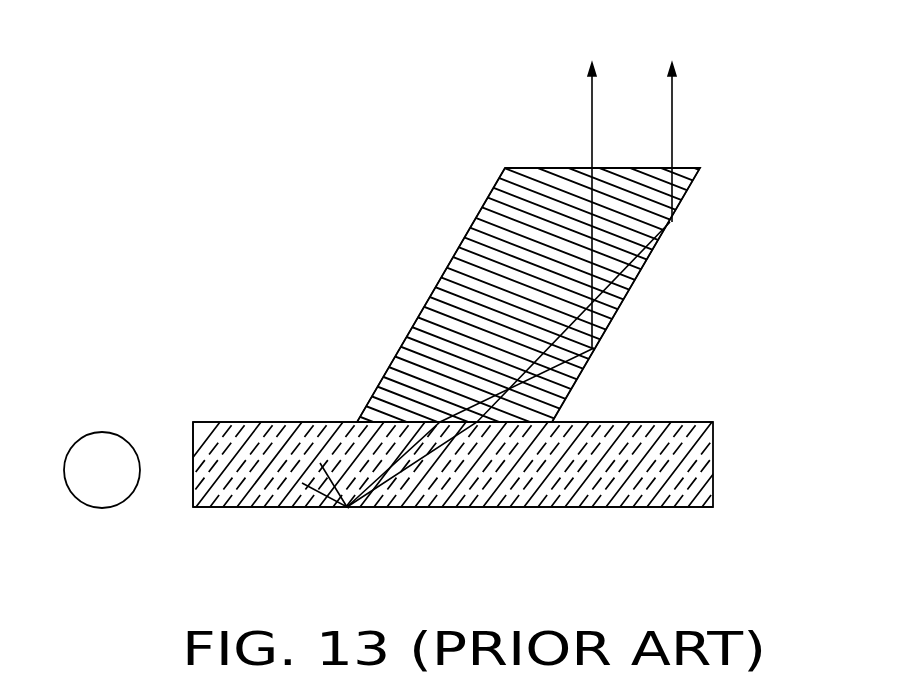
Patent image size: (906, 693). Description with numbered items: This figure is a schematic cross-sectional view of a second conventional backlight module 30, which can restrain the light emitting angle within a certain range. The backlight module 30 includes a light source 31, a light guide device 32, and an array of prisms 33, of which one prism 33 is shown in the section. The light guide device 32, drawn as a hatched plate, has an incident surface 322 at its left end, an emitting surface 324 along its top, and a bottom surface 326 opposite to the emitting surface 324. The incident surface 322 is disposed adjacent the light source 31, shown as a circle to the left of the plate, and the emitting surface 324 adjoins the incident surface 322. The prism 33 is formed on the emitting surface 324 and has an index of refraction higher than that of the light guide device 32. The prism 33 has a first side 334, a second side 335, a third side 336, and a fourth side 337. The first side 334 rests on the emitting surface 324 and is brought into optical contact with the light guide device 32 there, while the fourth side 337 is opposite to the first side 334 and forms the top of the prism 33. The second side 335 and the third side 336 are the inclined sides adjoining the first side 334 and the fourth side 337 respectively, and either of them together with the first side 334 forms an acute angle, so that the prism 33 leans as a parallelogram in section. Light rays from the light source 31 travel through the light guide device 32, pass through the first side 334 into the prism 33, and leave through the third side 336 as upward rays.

The backlight module 30 is at (368, 78).
The light source 31 is at (98, 448).
The light guide device 32 is at (467, 476).
The incident surface 322 is at (190, 456).
The emitting surface 324 is at (632, 418).
The bottom surface 326 is at (413, 508).
The prism 33 is at (514, 293).
The first side 334 is at (372, 430).
The second side 335 is at (420, 314).
The third side 336 is at (650, 256).
The fourth side 337 is at (516, 168).